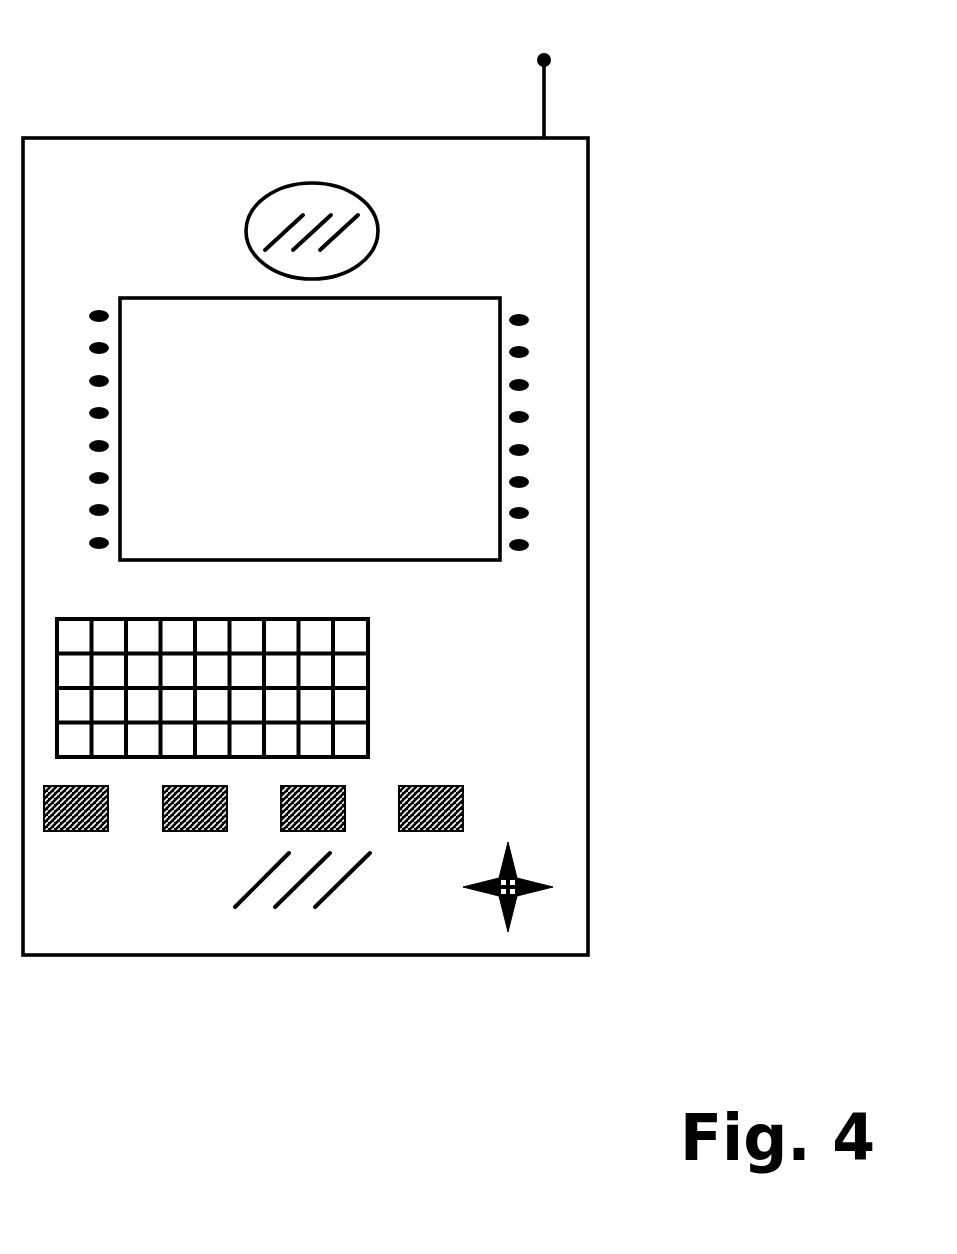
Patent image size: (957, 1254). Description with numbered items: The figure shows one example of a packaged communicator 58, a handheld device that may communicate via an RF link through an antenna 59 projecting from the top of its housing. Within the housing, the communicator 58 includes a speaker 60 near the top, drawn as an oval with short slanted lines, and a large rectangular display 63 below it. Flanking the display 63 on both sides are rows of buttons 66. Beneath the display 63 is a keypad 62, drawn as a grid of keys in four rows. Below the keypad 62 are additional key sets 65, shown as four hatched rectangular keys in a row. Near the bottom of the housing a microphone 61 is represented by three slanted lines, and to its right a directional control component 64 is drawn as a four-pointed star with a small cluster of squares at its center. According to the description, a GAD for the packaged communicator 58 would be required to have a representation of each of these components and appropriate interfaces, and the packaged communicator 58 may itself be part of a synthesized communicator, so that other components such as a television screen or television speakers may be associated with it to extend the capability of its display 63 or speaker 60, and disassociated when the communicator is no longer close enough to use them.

The communicator 58 is at (108, 137).
The antenna 59 is at (546, 52).
The speaker 60 is at (349, 191).
The microphone 61 is at (345, 887).
The keypad 62 is at (370, 632).
The display 63 is at (450, 298).
The directional control component 64 is at (518, 872).
The additional key sets 65 is at (438, 786).
The buttons 66 is at (528, 513).